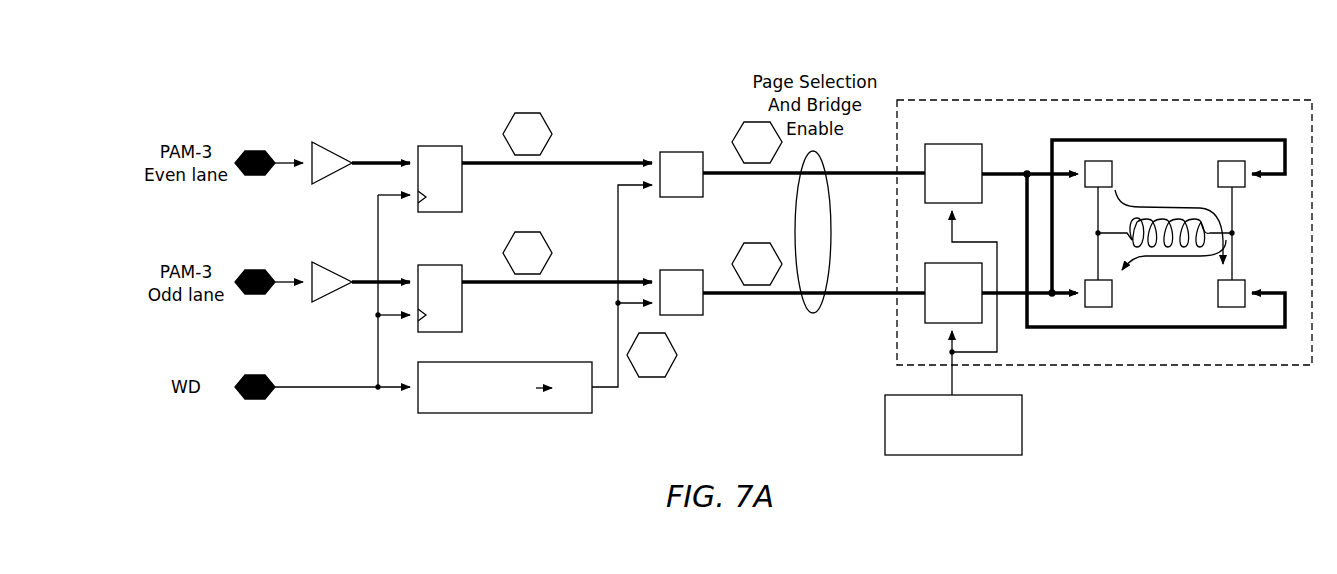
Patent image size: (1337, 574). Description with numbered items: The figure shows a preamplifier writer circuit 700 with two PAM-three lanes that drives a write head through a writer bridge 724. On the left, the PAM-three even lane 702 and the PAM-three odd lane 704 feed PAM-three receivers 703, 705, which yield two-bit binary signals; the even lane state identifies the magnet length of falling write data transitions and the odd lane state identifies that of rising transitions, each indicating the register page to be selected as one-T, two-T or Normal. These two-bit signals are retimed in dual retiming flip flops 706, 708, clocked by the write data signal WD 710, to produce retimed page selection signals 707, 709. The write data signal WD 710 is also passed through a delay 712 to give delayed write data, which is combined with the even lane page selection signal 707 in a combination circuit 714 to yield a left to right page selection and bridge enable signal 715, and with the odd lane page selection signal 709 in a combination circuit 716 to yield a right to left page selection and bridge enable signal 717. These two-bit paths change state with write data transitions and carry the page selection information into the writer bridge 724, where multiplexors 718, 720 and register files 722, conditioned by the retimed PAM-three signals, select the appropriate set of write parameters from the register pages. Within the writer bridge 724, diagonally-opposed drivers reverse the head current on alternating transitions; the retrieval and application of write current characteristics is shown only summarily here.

The preamplifier writer circuit 700 is at (236, 72).
The PAM-3 even lane 702 is at (284, 168).
The PAM-3 receiver 703 is at (330, 175).
The PAM-3 odd lane 704 is at (284, 287).
The PAM-3 receiver 705 is at (330, 294).
The retiming flip flop 706 is at (441, 146).
The even lane page selection signal 707 is at (572, 162).
The retiming flip flop 708 is at (441, 265).
The odd lane page selection signal 709 is at (572, 281).
The write data signal WD 710 is at (320, 390).
The delay 712 is at (473, 414).
The combination circuit 714 is at (683, 152).
The left to right page selection and bridge enable signal 715 is at (848, 176).
The combination circuit 716 is at (683, 270).
The right to left page selection and bridge enable signal 717 is at (848, 297).
The multiplexor 718 is at (953, 173).
The multiplexor 720 is at (953, 293).
The register files 722 is at (953, 333).
The writer bridge 724 is at (1263, 100).